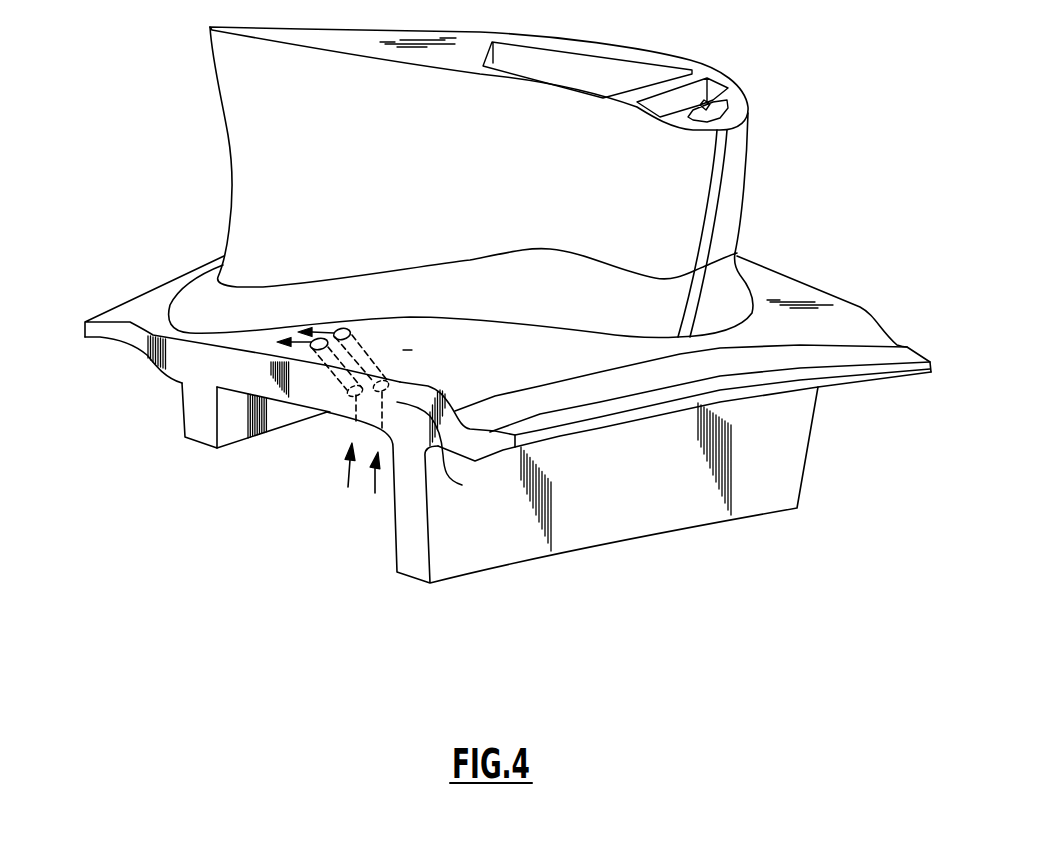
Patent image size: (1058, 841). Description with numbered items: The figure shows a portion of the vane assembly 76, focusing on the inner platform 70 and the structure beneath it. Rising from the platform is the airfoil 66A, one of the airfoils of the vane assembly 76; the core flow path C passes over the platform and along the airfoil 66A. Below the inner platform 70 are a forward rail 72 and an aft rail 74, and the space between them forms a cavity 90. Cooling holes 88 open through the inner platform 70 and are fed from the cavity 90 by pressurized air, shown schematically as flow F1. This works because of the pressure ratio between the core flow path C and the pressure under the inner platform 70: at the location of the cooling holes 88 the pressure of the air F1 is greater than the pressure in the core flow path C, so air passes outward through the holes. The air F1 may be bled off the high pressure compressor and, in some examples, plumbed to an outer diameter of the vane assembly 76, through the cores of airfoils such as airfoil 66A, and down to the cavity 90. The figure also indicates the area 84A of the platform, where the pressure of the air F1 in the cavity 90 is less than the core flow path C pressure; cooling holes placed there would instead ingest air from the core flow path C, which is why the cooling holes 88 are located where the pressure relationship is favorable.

The vane assembly 76 is at (145, 88).
The airfoil 66A is at (690, 187).
The area 84A is at (496, 372).
The inner platform 70 is at (456, 440).
The forward rail 72 is at (408, 523).
The aft rail 74 is at (200, 390).
The cooling holes 88 is at (341, 327).
The cavity 90 is at (309, 482).
The core flow path C is at (302, 165).
The flow F1 is at (348, 487).